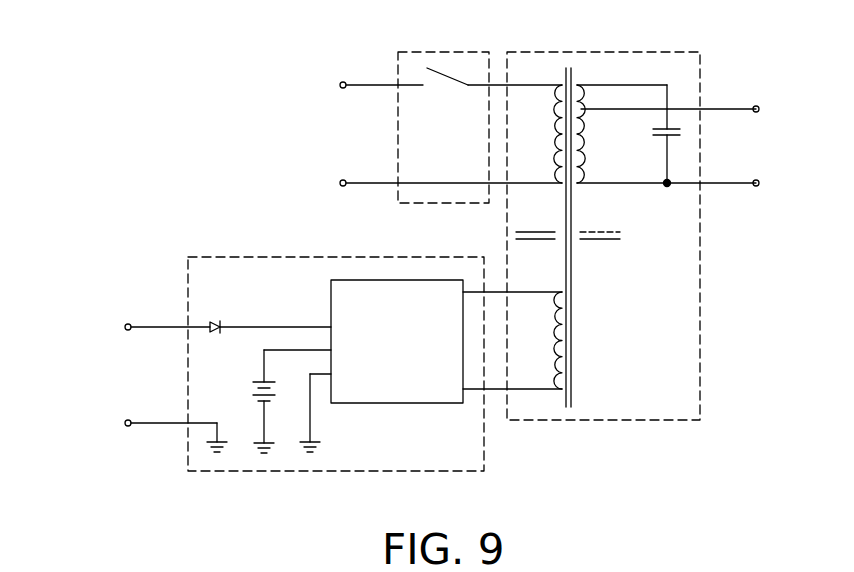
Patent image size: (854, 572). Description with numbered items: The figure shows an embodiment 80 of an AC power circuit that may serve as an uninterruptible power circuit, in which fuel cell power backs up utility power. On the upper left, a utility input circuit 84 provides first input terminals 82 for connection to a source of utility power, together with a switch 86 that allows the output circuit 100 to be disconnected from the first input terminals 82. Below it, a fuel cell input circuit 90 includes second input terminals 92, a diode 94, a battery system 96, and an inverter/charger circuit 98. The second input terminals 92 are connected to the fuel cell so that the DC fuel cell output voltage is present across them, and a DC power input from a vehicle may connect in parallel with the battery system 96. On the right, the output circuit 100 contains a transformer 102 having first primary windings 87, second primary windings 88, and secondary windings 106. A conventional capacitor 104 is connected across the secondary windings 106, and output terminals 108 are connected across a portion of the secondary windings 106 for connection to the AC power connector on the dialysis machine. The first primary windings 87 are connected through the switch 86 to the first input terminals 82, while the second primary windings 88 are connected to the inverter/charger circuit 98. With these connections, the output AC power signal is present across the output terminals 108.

The AC power circuit 80 is at (303, 138).
The first input terminals 82 is at (326, 98).
The utility input circuit 84 is at (430, 204).
The switch 86 is at (439, 100).
The first primary windings 87 is at (558, 76).
The second primary windings 88 is at (551, 399).
The fuel cell input circuit 90 is at (253, 472).
The second input terminals 92 is at (90, 332).
The diode 94 is at (232, 309).
The battery system 96 is at (238, 388).
The inverter/charger circuit 98 is at (392, 405).
The output circuit 100 is at (603, 412).
The transformer 102 is at (611, 372).
The capacitor 104 is at (638, 135).
The secondary windings 106 is at (611, 197).
The output terminals 108 is at (730, 187).